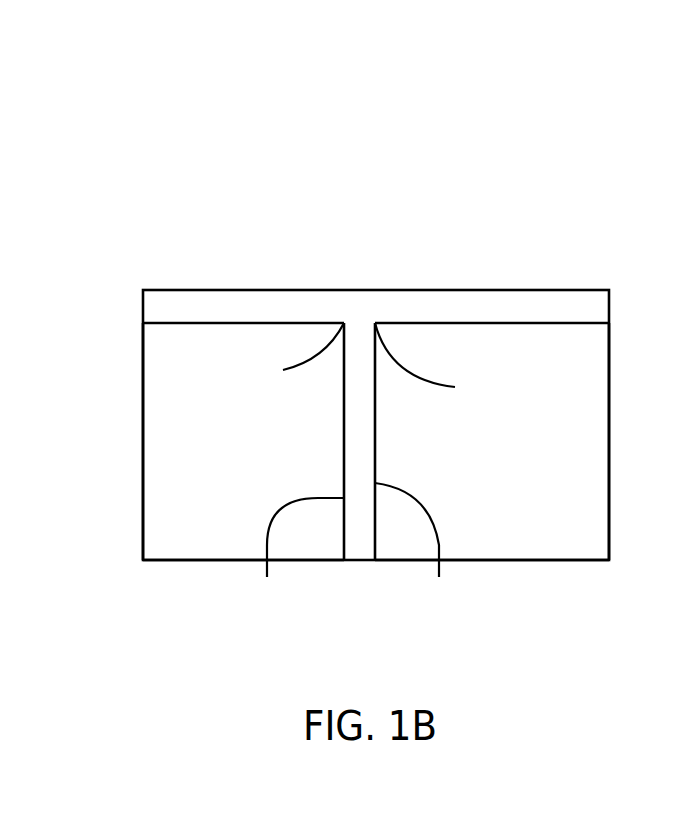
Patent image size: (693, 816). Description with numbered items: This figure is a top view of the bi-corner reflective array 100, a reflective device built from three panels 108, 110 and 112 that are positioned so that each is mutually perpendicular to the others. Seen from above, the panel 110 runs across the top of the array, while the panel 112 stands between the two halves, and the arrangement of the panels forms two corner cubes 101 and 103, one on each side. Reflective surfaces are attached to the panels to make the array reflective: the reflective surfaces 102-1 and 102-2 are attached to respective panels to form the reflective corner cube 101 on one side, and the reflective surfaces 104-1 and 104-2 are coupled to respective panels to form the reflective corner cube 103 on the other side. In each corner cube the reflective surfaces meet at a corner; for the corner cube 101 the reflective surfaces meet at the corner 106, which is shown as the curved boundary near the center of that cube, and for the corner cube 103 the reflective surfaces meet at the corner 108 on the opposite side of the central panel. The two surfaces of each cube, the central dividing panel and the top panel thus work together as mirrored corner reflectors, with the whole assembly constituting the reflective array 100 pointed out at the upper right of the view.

The bi-corner reflective array 100 is at (536, 139).
The corner cube 101 is at (560, 437).
The corner cube 103 is at (160, 406).
The reflective surface 102-1 is at (543, 487).
The reflective surface 102-2 is at (428, 556).
The reflective surface 104-1 is at (230, 487).
The reflective surface 104-2 is at (291, 564).
The corner 106 is at (440, 373).
The panel 108 is at (290, 357).
The panel 110 is at (422, 307).
The panel 112 is at (360, 385).